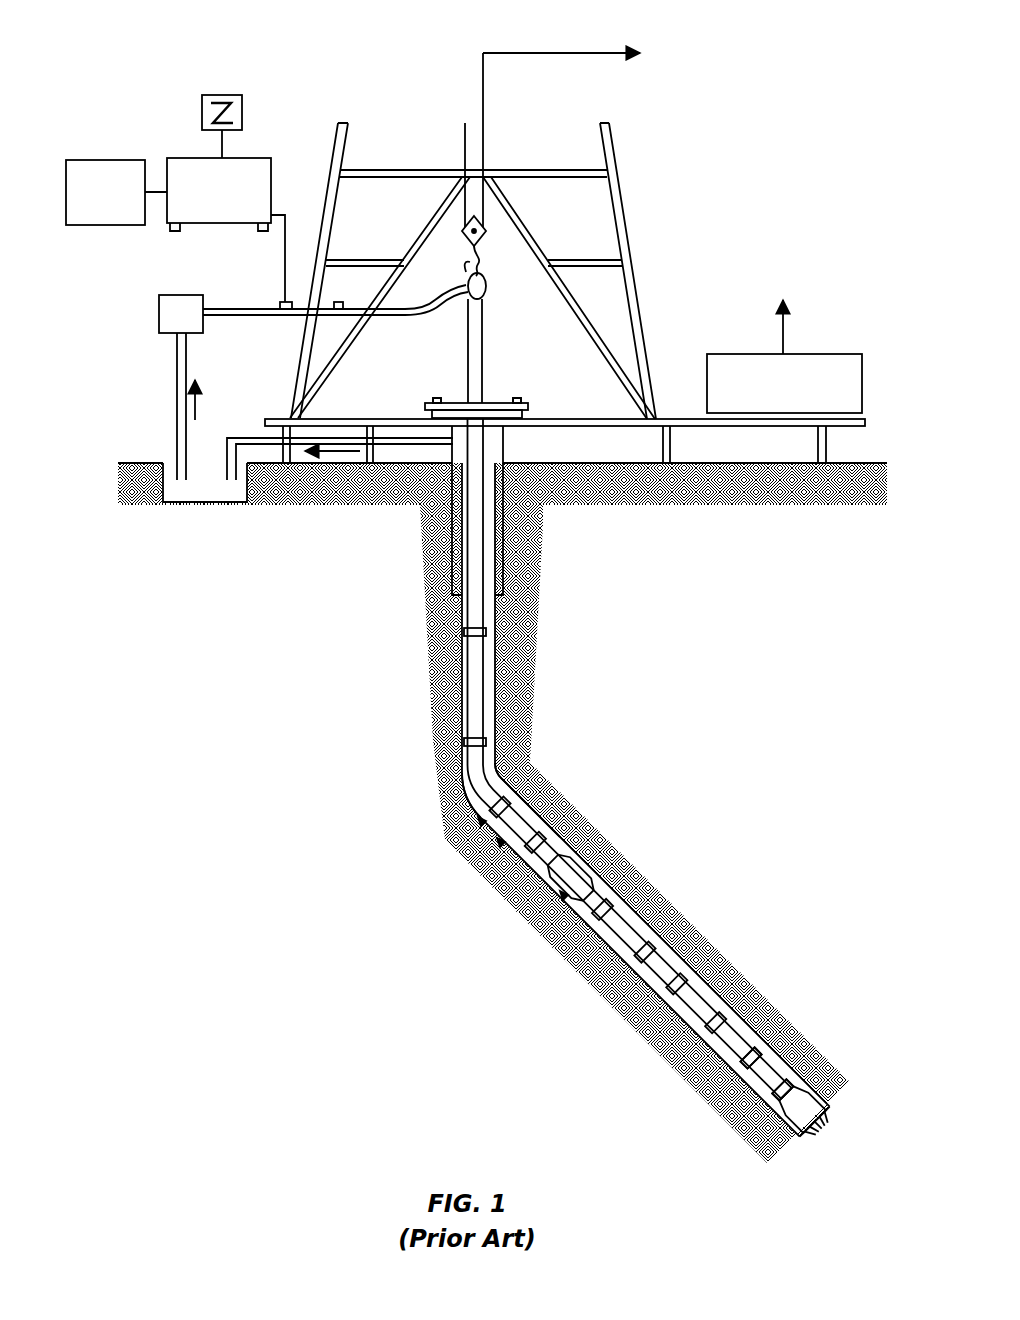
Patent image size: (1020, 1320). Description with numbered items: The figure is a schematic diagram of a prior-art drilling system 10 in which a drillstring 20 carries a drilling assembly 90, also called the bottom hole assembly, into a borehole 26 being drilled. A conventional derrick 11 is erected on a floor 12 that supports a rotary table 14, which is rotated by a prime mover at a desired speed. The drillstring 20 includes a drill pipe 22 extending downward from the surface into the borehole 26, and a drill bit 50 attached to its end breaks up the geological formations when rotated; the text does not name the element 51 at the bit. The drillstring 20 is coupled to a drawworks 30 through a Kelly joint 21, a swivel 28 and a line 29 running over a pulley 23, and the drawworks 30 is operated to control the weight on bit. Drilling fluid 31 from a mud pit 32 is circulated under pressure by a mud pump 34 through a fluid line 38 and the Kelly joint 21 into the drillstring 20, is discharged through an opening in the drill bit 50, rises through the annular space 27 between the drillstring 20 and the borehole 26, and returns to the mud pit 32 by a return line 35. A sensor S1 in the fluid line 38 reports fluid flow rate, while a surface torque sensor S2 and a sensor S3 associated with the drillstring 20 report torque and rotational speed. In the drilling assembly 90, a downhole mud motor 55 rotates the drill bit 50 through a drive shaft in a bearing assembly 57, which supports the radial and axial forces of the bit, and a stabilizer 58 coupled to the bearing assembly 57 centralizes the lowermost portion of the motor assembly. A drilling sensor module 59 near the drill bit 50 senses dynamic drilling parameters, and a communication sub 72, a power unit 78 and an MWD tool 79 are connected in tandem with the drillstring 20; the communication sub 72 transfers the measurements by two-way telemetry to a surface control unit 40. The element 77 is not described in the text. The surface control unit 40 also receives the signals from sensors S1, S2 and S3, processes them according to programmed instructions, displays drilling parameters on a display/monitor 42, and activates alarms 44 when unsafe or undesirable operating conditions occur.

The drilling system 10 is at (400, 64).
The derrick 11 is at (636, 272).
The floor 12 is at (660, 418).
The rotary table 14 is at (492, 400).
The drillstring 20 is at (490, 687).
The Kelly joint 21 is at (484, 330).
The drill pipe 22 is at (462, 665).
The pulley 23 is at (476, 232).
The borehole 26 is at (508, 766).
The annular space 27 is at (533, 800).
The swivel 28 is at (463, 300).
The line 29 is at (487, 140).
The drawworks 30 is at (830, 354).
The drilling fluid 31 is at (172, 475).
The mud pit 32 is at (195, 500).
The mud pump 34 is at (177, 294).
The return line 35 is at (415, 447).
The fluid line 38 is at (282, 316).
The surface control unit 40 is at (202, 157).
The display/monitor 42 is at (216, 94).
The alarms 44 is at (112, 226).
The drill bit 50 is at (828, 1089).
The formation at bit 51 is at (800, 1145).
The downhole motor 55 is at (683, 950).
The bearing assembly 57 is at (796, 1050).
The stabilizer 58 is at (812, 1070).
The drilling sensor module 59 is at (790, 1093).
The communication sub 72 is at (472, 785).
The drill string component 77 is at (560, 893).
The power unit 78 is at (480, 820).
The MWD tool 79 is at (498, 841).
The drilling assembly 90 is at (706, 850).
The sensor S1 is at (338, 302).
The surface torque sensor S2 is at (516, 400).
The sensor S3 is at (436, 400).